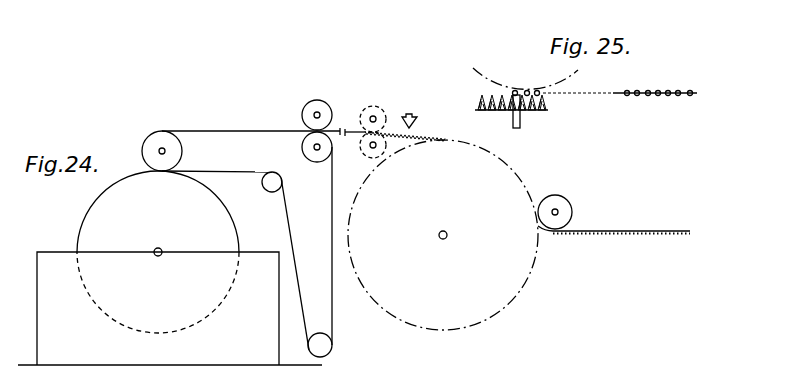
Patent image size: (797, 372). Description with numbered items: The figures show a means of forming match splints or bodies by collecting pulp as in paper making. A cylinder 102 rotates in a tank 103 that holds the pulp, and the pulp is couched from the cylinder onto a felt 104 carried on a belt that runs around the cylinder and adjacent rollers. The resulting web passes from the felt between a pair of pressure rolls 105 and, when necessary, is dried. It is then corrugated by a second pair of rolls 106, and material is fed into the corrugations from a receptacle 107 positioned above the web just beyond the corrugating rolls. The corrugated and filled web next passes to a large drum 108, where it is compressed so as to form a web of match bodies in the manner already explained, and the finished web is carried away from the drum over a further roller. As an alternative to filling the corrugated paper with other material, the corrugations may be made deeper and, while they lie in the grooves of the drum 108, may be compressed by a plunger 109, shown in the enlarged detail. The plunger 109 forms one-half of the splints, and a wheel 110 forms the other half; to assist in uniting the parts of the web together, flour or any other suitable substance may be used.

In FIG. 24, the cylinder 102 is at (233, 215).
In FIG. 24, the tank 103 is at (48, 258).
In FIG. 24, the felt 104 is at (243, 171).
In FIG. 24, the pressure rolls 105 is at (302, 113).
In FIG. 24, the corrugating rolls 106 is at (386, 117).
In FIG. 24, the receptacle 107 is at (417, 121).
In FIG. 24, the drum 108 is at (513, 176).
In FIG. 25, the plunger 109 is at (520, 123).
In FIG. 25, the wheel 110 is at (488, 76).